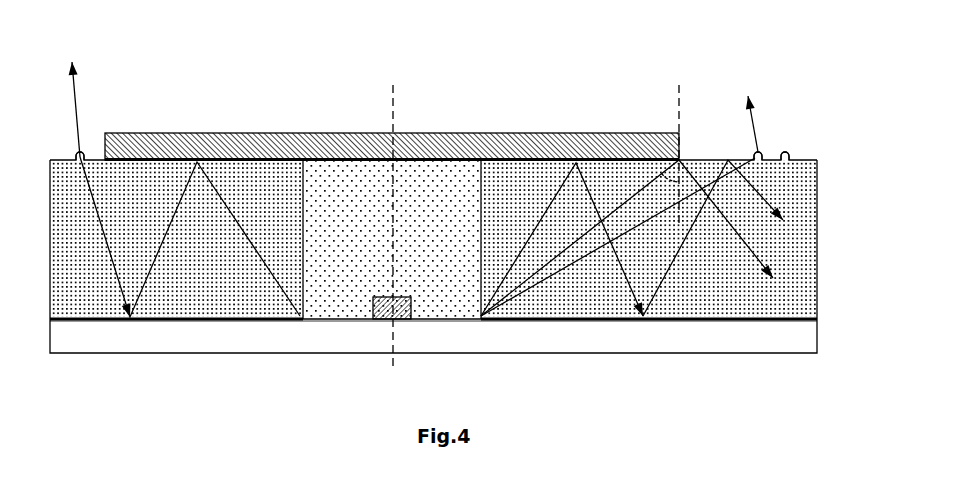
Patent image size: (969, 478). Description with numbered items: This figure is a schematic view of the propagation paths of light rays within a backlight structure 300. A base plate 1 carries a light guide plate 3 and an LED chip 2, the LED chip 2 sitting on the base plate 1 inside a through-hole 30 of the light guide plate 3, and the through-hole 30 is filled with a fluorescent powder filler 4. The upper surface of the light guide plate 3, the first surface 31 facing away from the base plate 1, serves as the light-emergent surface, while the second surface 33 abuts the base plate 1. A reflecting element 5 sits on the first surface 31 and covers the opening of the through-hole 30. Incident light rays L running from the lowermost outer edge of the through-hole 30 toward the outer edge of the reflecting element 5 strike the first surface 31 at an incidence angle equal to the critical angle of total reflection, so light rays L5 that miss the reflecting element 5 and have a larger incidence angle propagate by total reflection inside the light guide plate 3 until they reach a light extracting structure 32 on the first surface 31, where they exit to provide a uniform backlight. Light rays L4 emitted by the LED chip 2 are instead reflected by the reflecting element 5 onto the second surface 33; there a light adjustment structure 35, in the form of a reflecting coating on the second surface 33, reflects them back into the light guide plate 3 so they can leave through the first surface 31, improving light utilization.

The light emitting device 300 is at (122, 72).
The base plate 1 is at (817, 335).
The LED chip 2 is at (400, 318).
The light guide plate 3 is at (817, 258).
The fluorescent powder filler 4 is at (346, 188).
The reflecting element 5 is at (412, 133).
The through-hole 30 is at (303, 252).
The first surface 31 is at (816, 158).
The light extracting structure 32 is at (790, 155).
The second surface 33 is at (727, 320).
The light adjustment structure 35 is at (210, 320).
The light rays L4 is at (165, 215).
The incident light rays L is at (623, 207).
The light rays L5 is at (711, 163).